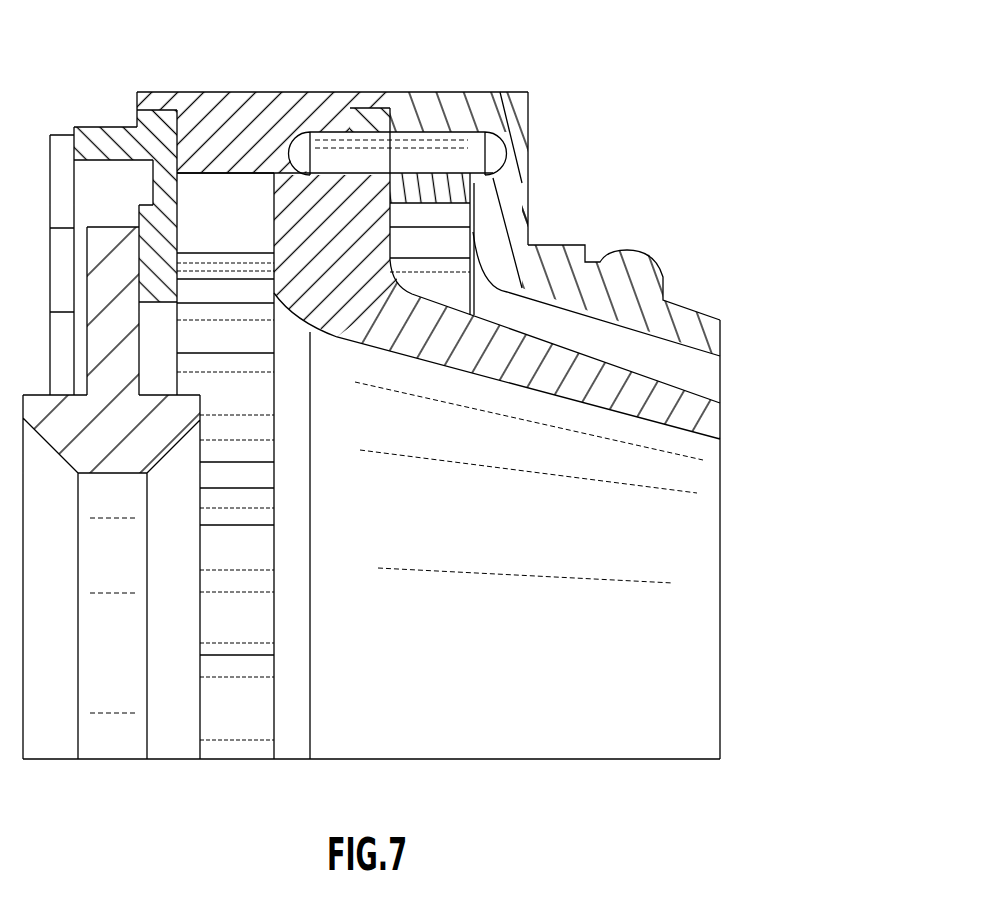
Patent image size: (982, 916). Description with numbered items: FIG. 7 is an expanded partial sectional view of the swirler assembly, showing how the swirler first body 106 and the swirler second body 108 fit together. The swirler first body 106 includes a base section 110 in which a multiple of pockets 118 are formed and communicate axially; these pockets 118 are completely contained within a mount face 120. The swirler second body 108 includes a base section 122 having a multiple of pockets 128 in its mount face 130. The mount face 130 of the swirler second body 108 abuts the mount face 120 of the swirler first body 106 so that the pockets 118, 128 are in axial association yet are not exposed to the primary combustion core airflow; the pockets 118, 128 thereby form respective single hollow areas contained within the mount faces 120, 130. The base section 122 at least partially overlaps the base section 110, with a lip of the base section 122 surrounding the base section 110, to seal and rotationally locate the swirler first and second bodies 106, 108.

The swirler first body 106 is at (747, 392).
The swirler second body 108 is at (688, 275).
The base section 110 is at (283, 92).
The pockets 118 is at (347, 130).
The mount face 120 is at (395, 179).
The base section 122 is at (432, 84).
The pockets 128 is at (463, 143).
The mount face 130 is at (392, 178).